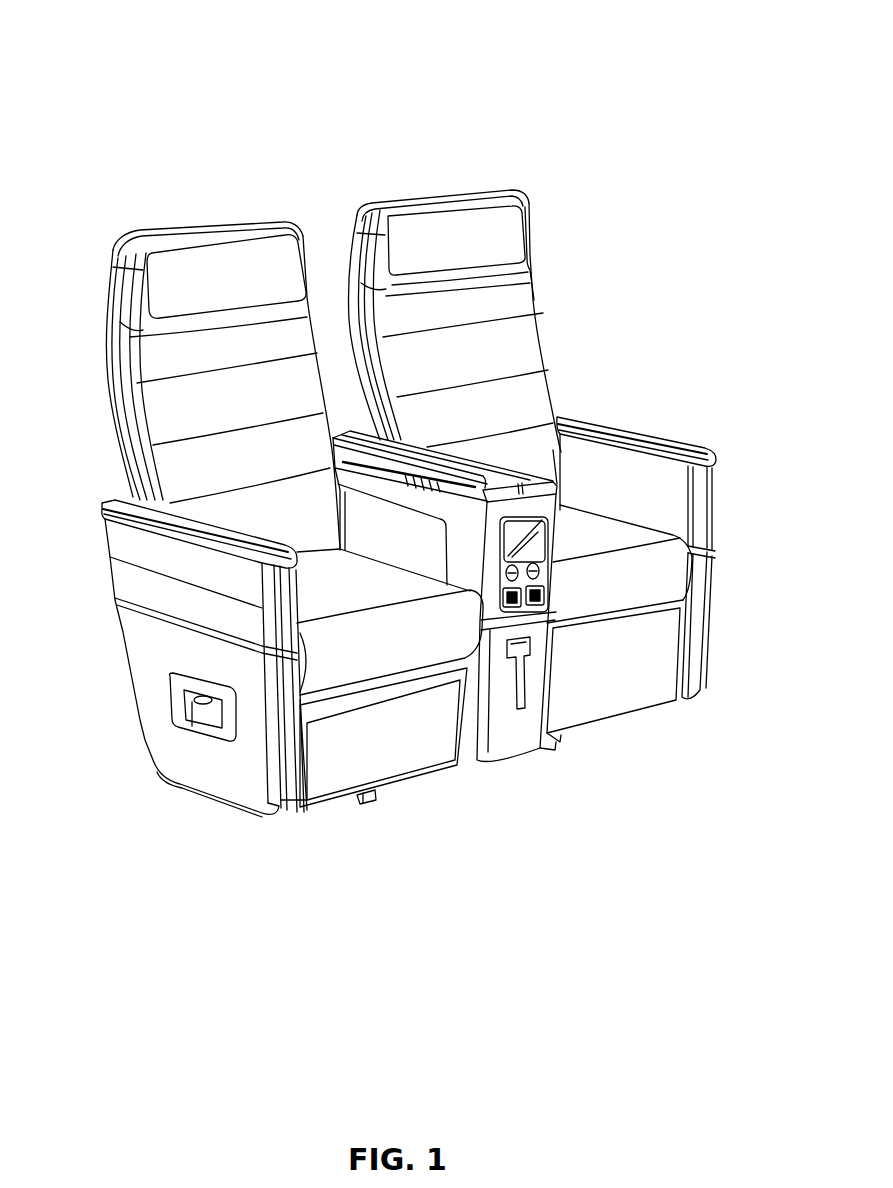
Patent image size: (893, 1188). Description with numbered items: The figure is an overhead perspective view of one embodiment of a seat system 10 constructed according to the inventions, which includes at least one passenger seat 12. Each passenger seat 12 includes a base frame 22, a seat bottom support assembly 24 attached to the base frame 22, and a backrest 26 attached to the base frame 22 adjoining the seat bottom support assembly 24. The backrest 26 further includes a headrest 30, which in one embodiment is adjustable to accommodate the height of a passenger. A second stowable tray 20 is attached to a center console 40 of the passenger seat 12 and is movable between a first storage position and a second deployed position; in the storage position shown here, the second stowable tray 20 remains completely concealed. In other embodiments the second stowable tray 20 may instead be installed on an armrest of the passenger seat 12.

The seat system 10 is at (667, 85).
The passenger seat 12 is at (254, 222).
The second stowable tray 20 is at (363, 430).
The base frame 22 is at (358, 800).
The seat bottom support assembly 24 is at (298, 608).
The backrest 26 is at (168, 418).
The headrest 30 is at (187, 265).
The center console 40 is at (497, 727).